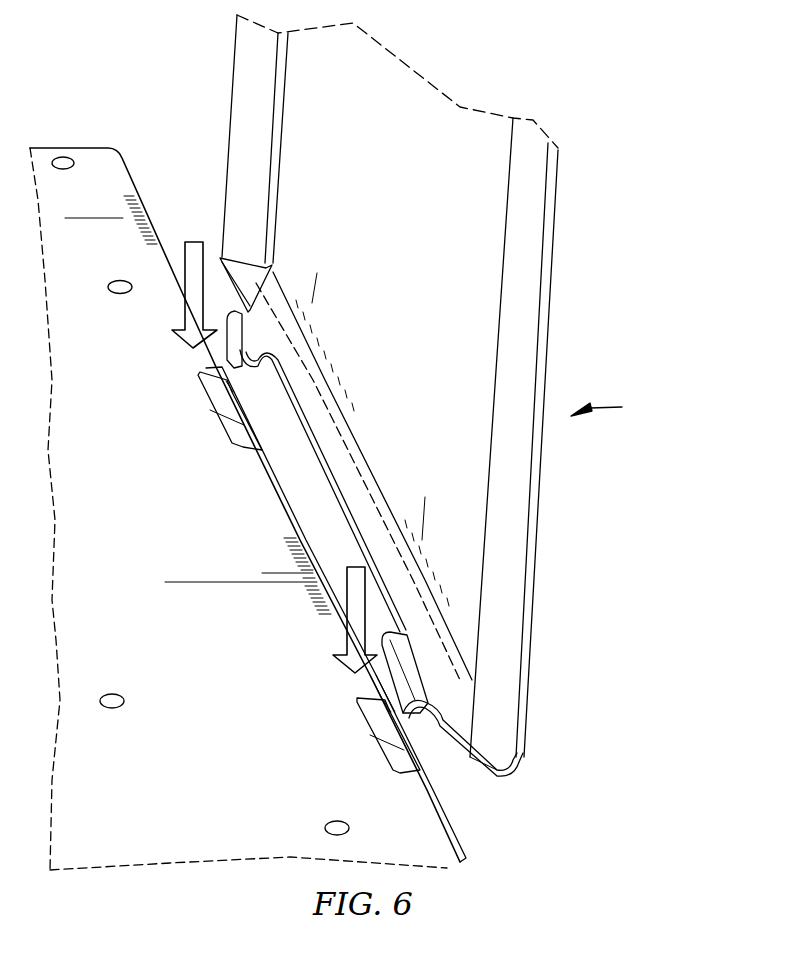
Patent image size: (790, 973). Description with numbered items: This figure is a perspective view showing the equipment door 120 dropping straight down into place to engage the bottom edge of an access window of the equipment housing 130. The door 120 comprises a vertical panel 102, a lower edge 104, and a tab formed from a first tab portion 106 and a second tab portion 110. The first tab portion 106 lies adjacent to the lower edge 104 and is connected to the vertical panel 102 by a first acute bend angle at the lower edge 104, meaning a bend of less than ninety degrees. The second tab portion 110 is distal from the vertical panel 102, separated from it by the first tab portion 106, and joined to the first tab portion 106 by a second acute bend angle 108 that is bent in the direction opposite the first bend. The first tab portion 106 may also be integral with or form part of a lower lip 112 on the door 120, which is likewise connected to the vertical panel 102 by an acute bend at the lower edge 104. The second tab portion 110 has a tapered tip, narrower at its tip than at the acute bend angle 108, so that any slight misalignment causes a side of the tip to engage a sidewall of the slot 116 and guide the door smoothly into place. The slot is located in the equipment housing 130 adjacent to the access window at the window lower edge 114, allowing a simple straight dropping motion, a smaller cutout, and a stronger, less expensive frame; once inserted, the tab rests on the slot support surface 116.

The vertical panel 102 is at (395, 300).
The lower edge 104 is at (505, 772).
The first tab portion 106 is at (437, 697).
The second acute bend angle 108 is at (383, 635).
The second tab portion 110 is at (397, 681).
The lower lip 112 is at (238, 256).
The window lower edge 114 is at (278, 478).
The slot support surface 116 is at (397, 740).
The door 120 is at (615, 411).
The equipment housing 130 is at (211, 795).